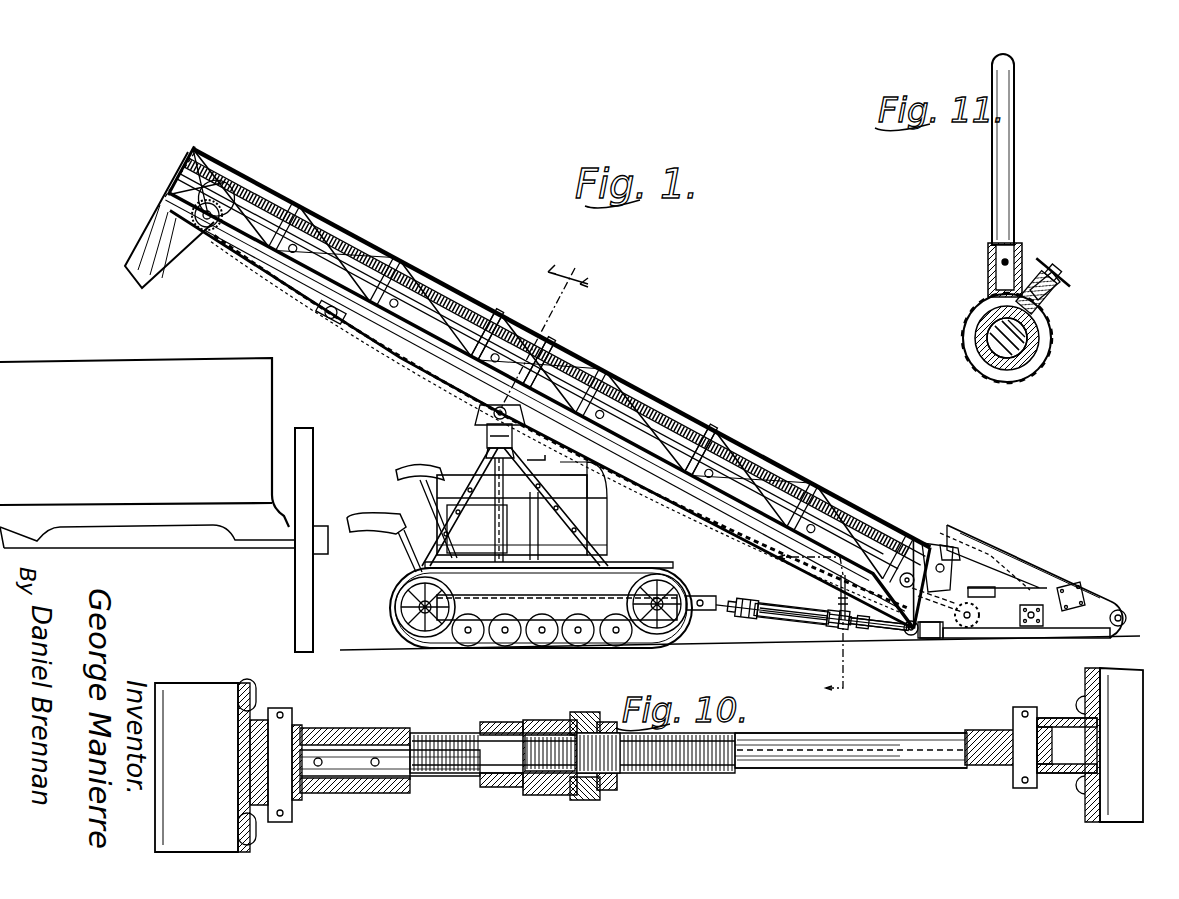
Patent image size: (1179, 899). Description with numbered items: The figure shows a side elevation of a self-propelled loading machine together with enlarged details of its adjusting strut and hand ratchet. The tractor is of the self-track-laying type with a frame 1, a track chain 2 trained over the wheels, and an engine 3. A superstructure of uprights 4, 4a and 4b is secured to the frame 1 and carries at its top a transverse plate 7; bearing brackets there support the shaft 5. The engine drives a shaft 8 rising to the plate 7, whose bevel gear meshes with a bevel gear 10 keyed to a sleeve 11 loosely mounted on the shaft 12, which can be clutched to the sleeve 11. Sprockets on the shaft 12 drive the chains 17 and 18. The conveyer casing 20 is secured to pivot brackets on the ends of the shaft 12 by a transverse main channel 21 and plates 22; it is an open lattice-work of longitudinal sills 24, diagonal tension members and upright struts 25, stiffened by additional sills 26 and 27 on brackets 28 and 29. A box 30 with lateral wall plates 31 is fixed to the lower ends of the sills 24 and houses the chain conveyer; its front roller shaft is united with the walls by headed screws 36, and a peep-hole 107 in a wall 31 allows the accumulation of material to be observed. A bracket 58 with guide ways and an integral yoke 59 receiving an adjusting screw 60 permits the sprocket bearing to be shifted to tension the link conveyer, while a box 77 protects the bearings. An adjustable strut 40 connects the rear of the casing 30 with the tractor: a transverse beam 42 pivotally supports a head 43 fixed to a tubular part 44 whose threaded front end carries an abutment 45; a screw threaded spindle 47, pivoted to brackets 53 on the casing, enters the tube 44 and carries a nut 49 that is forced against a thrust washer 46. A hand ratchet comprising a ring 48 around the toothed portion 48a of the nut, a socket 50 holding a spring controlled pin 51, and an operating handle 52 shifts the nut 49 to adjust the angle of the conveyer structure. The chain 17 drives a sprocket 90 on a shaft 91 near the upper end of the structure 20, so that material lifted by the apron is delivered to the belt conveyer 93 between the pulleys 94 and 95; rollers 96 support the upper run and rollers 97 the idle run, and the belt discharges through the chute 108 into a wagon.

In FIG. 1, the frame 1 is at (565, 600).
In FIG. 1, the track chain 2 is at (658, 575).
In FIG. 1, the engine 3 is at (575, 518).
In FIG. 1, the upright 4 is at (544, 353).
In FIG. 1, the upright 4a is at (424, 545).
In FIG. 1, the upright 4b is at (544, 526).
In FIG. 1, the shaft 5 is at (494, 418).
In FIG. 1, the transverse plate or channel 7 is at (487, 452).
In FIG. 1, the shaft 8 is at (490, 530).
In FIG. 1, the bevel gear 10 is at (716, 596).
In FIG. 1, the sleeve 11 is at (809, 613).
In FIG. 1, the shaft 12 is at (485, 432).
In FIG. 1, the driving chain 17 is at (380, 356).
In FIG. 1, the driving chain 18 is at (605, 498).
In FIG. 1, the conveyer casing 20 is at (612, 372).
In FIG. 1, the transverse main channel 21 is at (478, 410).
In FIG. 1, the plates 22 is at (538, 332).
In FIG. 1, the longitudinal sills 24 is at (668, 414).
In FIG. 1, the upright struts 25 is at (516, 330).
In FIG. 1, the longitudinal sill 26 is at (706, 432).
In FIG. 1, the longitudinal sill 27 is at (355, 333).
In FIG. 1, the brackets 28 is at (410, 283).
In FIG. 1, the brackets 29 is at (330, 313).
In FIG. 1, the box or housing 30 is at (1055, 563).
In FIG. 1, the lateral wall plates 31 is at (1085, 578).
In FIG. 1, the headed screws 36 is at (1122, 610).
In FIG. 1, the strut 40 is at (795, 628).
In FIG. 1, the transverse beam 42 is at (752, 604).
In FIG. 10, the transverse beam 42 is at (190, 692).
In FIG. 1, the head 43 is at (776, 596).
In FIG. 10, the head 43 is at (318, 732).
In FIG. 1, the tubular part 44 is at (793, 606).
In FIG. 10, the tubular part 44 is at (414, 740).
In FIG. 1, the abutment 45 is at (833, 616).
In FIG. 10, the abutment 45 is at (480, 735).
In FIG. 10, the thrust washer 46 is at (515, 790).
In FIG. 1, the screw threaded spindle 47 is at (888, 628).
In FIG. 11, the screw threaded spindle 47 is at (1030, 345).
In FIG. 10, the screw threaded spindle 47 is at (748, 770).
In FIG. 1, the ring 48 is at (848, 630).
In FIG. 11, the ring 48 is at (962, 312).
In FIG. 10, the ring 48 is at (600, 792).
In FIG. 11, the toothed portion 48a is at (1002, 385).
In FIG. 10, the toothed portion 48a is at (586, 716).
In FIG. 1, the nut 49 is at (830, 625).
In FIG. 10, the nut 49 is at (548, 796).
In FIG. 11, the socket 50 is at (1060, 284).
In FIG. 11, the spring controlled pin 51 is at (1050, 298).
In FIG. 1, the operating handle 52 is at (846, 600).
In FIG. 11, the operating handle 52 is at (1016, 194).
In FIG. 1, the brackets 53 is at (942, 636).
In FIG. 10, the brackets 53 is at (1062, 730).
In FIG. 1, the bracket 58 is at (978, 557).
In FIG. 1, the yoke 59 is at (955, 550).
In FIG. 1, the adjusting screw 60 is at (930, 585).
In FIG. 1, the box 77 is at (1025, 568).
In FIG. 1, the sprocket 90 is at (212, 230).
In FIG. 1, the shaft 91 is at (198, 228).
In FIG. 1, the belt conveyer 93 is at (690, 416).
In FIG. 1, the roller or pulley 94 is at (248, 220).
In FIG. 1, the roller or pulley 95 is at (990, 630).
In FIG. 1, the rollers 96 is at (318, 222).
In FIG. 1, the rollers 97 is at (355, 318).
In FIG. 1, the peep-hole 107 is at (1036, 628).
In FIG. 1, the chute 108 is at (133, 262).